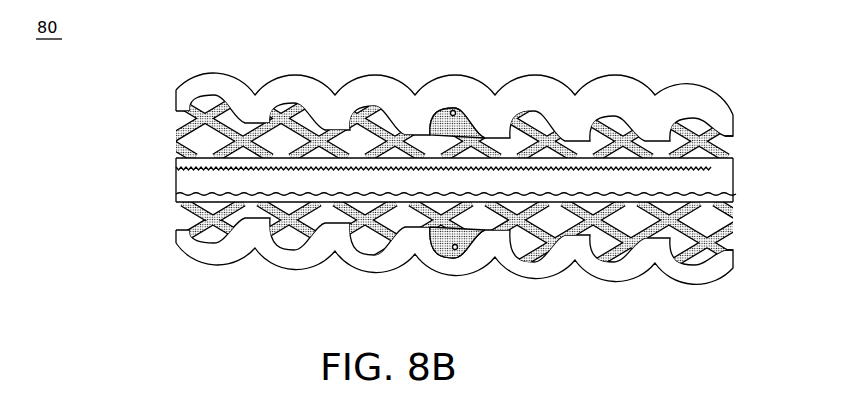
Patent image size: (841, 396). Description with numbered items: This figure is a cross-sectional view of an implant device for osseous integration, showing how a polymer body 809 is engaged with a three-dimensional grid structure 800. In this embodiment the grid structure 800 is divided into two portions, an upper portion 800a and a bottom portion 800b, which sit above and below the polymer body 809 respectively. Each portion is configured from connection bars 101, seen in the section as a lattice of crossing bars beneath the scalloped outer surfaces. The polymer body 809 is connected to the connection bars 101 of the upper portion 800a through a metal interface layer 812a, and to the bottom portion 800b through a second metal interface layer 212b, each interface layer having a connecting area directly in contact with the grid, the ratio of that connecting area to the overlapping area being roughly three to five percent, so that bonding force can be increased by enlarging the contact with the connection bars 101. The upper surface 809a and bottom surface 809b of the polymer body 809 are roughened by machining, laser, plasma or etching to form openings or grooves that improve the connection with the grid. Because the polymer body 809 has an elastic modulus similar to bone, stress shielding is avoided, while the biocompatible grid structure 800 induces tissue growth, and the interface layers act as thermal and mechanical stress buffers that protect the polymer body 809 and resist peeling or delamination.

The 3D grid structure 800 is at (90, 107).
The upper portion 800a is at (146, 75).
The bottom portion 800b is at (146, 207).
The metal interface layer 812a is at (176, 170).
The lower electrode layer 212b is at (198, 198).
The polymer body 809 is at (650, 182).
The upper surface 809a is at (284, 170).
The bottom surface 809b is at (402, 196).
The connection bars 101 is at (470, 120).